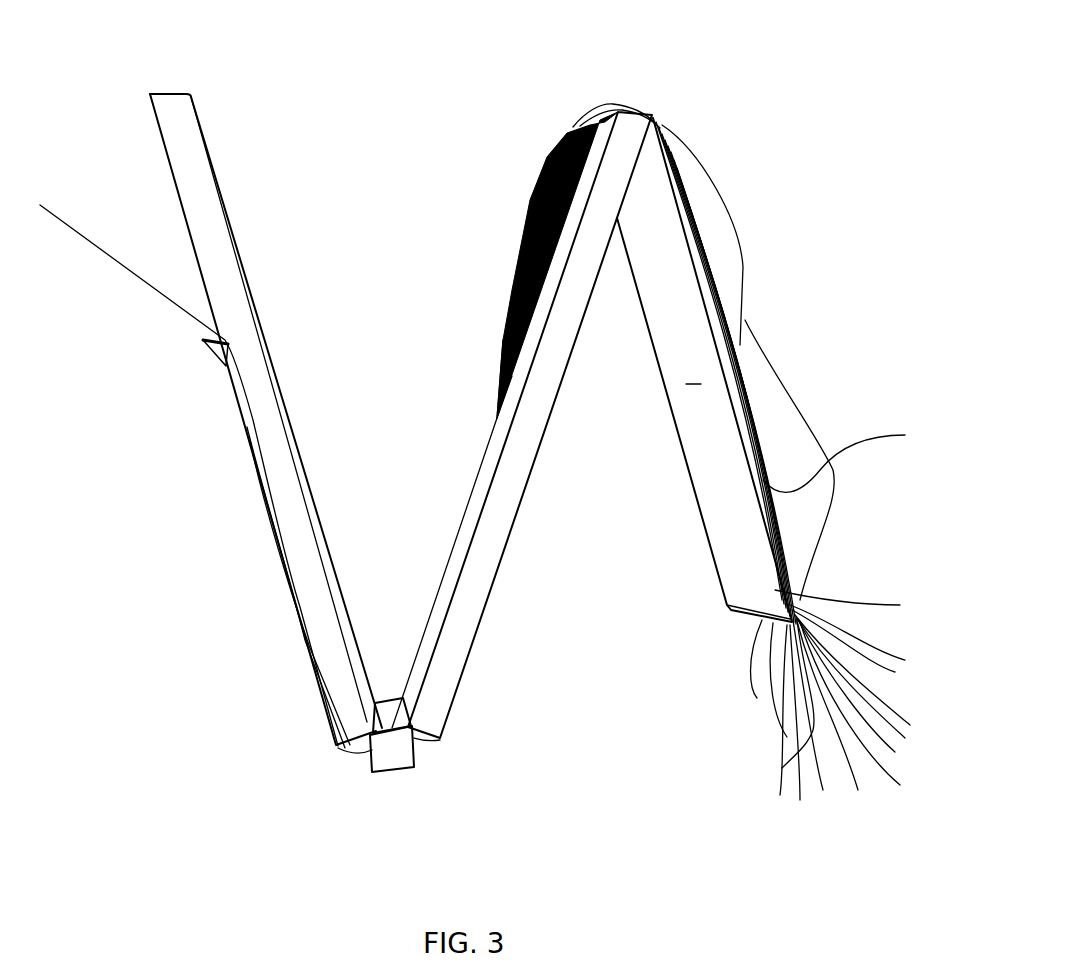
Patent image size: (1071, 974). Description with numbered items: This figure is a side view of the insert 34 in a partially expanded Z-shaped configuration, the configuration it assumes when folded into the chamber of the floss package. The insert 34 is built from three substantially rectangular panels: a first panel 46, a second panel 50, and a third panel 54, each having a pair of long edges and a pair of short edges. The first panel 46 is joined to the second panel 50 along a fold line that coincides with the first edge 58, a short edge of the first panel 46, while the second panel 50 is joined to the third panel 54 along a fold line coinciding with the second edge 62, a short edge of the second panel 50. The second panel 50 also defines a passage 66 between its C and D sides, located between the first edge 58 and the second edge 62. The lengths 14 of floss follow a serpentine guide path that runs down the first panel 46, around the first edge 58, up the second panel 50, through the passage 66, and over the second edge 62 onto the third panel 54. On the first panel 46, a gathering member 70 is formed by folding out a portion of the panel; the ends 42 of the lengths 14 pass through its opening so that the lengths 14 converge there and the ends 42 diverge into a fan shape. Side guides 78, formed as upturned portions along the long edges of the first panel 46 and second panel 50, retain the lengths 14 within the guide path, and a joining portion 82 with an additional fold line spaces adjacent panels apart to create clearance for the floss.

The insert 34 is at (768, 53).
The lengths of floss 14 is at (527, 237).
The ends of the lengths of floss 42 is at (104, 228).
The first panel 46 is at (212, 212).
The second panel 50 is at (478, 495).
The third panel 54 is at (690, 447).
The first edge 58 is at (358, 750).
The second edge 62 is at (598, 105).
The passage 66 is at (518, 383).
The gathering member 70 is at (212, 357).
The side guides 78 is at (245, 330).
The joining portion 82 is at (390, 710).